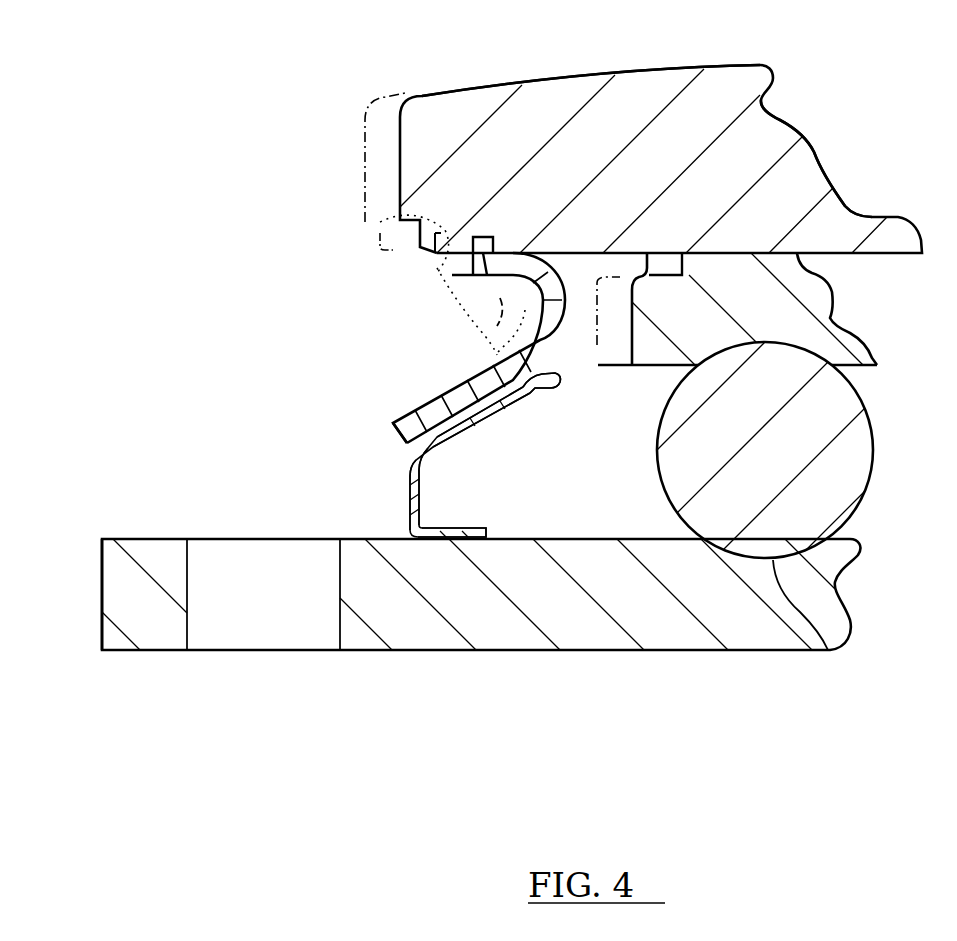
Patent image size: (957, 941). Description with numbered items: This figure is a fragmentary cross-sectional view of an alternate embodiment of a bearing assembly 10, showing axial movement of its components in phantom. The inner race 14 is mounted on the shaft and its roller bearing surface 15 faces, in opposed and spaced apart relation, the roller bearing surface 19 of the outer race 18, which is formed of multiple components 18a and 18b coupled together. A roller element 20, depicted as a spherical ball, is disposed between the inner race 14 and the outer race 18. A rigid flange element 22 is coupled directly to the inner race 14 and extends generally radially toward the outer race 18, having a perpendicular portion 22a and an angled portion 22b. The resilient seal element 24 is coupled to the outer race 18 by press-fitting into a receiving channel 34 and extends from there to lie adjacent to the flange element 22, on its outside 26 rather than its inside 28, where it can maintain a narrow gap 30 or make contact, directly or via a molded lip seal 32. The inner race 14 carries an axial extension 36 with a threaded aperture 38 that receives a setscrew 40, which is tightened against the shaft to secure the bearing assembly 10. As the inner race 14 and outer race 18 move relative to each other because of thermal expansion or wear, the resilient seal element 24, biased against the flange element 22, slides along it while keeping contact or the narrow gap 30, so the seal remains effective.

The bearing assembly 10 is at (188, 108).
The inner race 14 is at (563, 617).
The roller bearing surface 15 is at (828, 650).
The outer race 18 is at (440, 67).
The outer race component 18a is at (597, 127).
The outer race component 18b is at (785, 267).
The roller bearing surface 19 is at (780, 340).
The roller element 20 is at (747, 503).
The flange element 22 is at (450, 548).
The perpendicular portion 22a is at (408, 497).
The angled portion 22b is at (425, 477).
The resilient seal element 24 is at (432, 366).
The outside of flange element 26 is at (473, 362).
The inside of flange element 28 is at (493, 407).
The narrow gap 30 is at (560, 373).
The molded lip seal 32 is at (437, 432).
The receiving channel 34 is at (480, 247).
The axial extension 36 is at (127, 588).
The threaded aperture 38 is at (187, 622).
The setscrew 40 is at (232, 617).